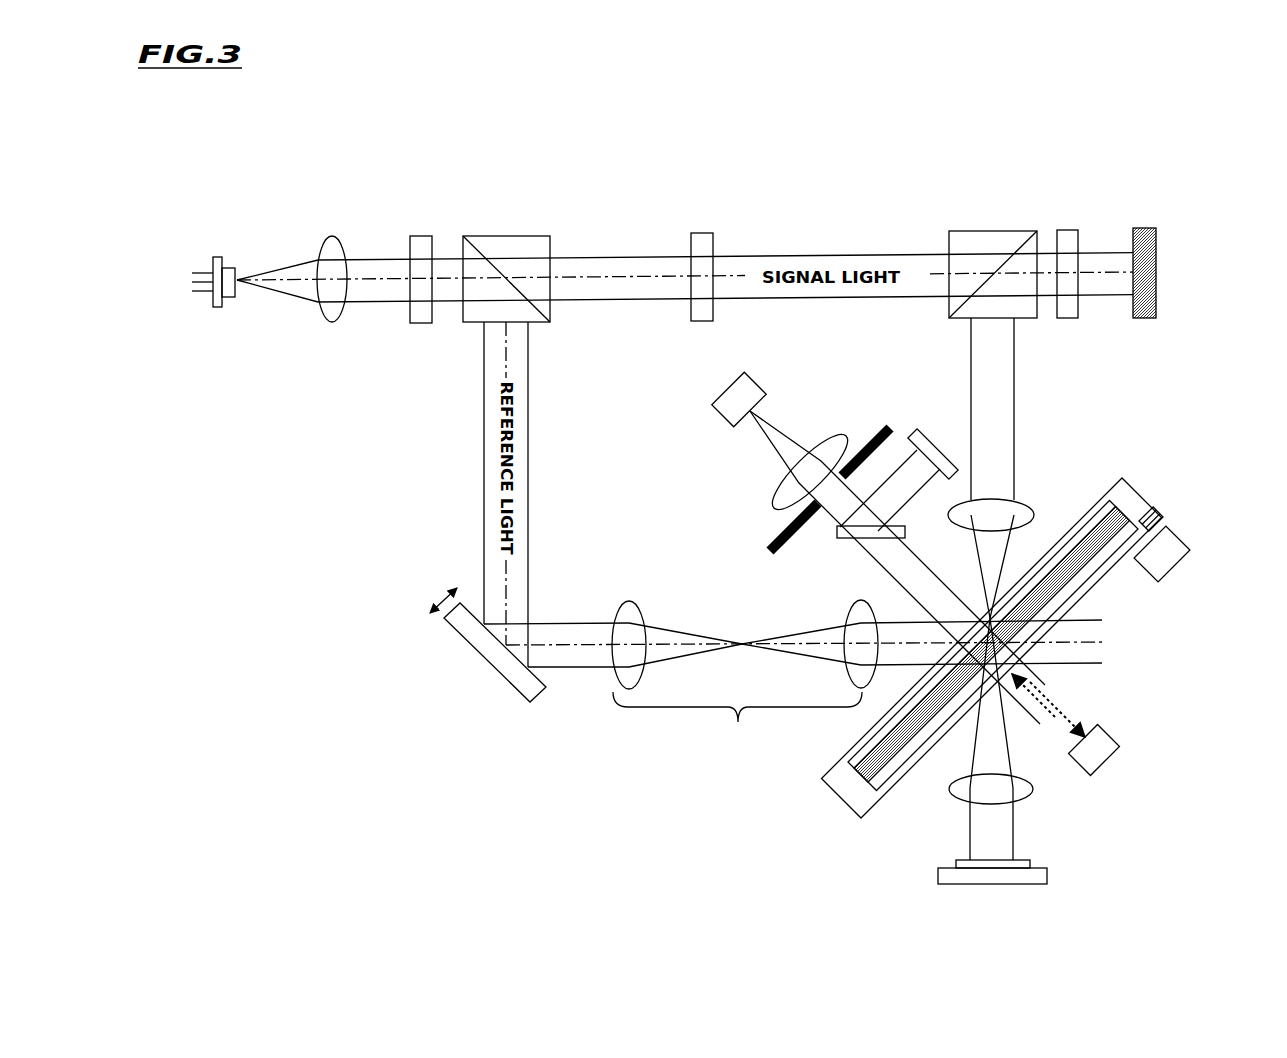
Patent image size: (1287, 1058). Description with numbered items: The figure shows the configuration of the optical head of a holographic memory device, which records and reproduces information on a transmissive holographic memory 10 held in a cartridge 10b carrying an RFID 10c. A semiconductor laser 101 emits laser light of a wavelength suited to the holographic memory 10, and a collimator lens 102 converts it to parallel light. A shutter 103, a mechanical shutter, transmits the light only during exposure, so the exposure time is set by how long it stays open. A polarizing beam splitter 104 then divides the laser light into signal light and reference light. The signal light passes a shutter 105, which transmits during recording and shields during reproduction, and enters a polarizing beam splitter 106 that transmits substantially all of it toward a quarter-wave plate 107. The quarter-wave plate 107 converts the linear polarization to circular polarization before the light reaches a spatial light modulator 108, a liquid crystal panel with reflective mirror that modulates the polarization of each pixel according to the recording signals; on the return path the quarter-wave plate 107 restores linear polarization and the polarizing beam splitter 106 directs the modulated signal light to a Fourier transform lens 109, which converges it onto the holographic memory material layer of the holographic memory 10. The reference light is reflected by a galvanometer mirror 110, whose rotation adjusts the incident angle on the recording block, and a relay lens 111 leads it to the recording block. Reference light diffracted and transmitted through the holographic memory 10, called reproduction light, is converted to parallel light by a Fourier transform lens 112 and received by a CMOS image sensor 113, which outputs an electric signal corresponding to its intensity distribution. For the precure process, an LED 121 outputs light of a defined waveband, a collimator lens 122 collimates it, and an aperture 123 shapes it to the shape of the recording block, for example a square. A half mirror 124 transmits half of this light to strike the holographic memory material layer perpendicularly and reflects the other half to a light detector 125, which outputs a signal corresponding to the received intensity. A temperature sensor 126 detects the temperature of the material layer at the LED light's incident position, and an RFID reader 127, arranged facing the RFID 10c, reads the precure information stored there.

The holographic memory 10 is at (828, 795).
The cartridge 10b is at (860, 807).
The RFID 10c is at (1158, 510).
The semiconductor laser 101 is at (230, 257).
The collimator lens 102 is at (332, 333).
The shutter 103 is at (418, 232).
The polarizing beam splitter 104 is at (517, 228).
The shutter 105 is at (702, 238).
The polarizing beam splitter 106 is at (988, 232).
The λ/4 plate 107 is at (1068, 322).
The spatial light modulator 108 is at (1158, 275).
The Fourier transform lens 109 is at (1032, 502).
The galvanometer mirror 110 is at (475, 658).
The relay lens 111 is at (745, 677).
The Fourier transform lens 112 is at (1030, 802).
The CMOS image sensor 113 is at (995, 875).
The LED 121 is at (713, 396).
The collimator lens 122 is at (838, 433).
The aperture 123 is at (768, 540).
The half mirror 124 is at (848, 540).
The light detector 125 is at (927, 434).
The temperature sensor 126 is at (1108, 728).
The RFID reader 127 is at (1168, 563).